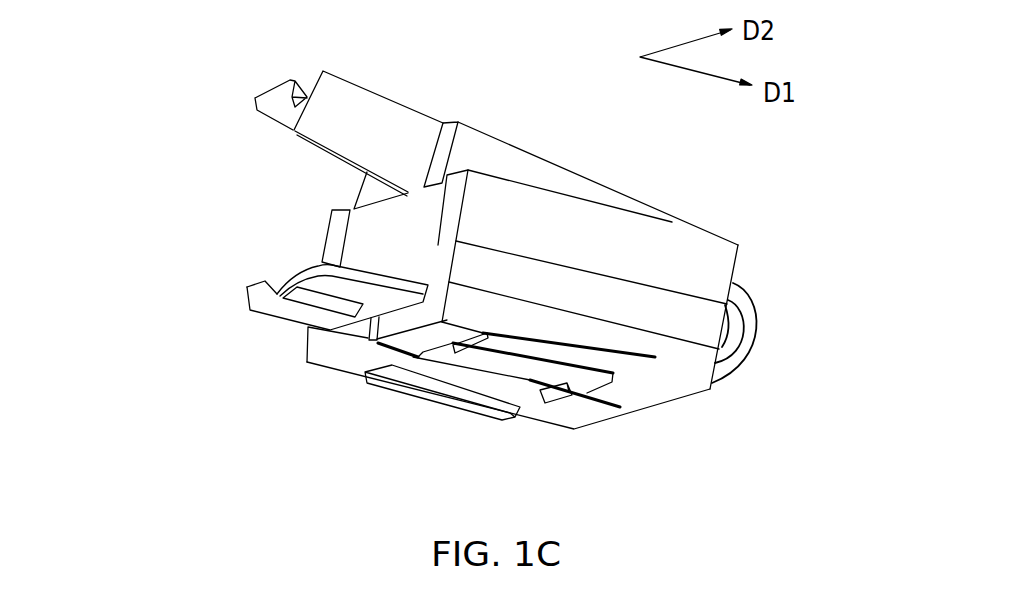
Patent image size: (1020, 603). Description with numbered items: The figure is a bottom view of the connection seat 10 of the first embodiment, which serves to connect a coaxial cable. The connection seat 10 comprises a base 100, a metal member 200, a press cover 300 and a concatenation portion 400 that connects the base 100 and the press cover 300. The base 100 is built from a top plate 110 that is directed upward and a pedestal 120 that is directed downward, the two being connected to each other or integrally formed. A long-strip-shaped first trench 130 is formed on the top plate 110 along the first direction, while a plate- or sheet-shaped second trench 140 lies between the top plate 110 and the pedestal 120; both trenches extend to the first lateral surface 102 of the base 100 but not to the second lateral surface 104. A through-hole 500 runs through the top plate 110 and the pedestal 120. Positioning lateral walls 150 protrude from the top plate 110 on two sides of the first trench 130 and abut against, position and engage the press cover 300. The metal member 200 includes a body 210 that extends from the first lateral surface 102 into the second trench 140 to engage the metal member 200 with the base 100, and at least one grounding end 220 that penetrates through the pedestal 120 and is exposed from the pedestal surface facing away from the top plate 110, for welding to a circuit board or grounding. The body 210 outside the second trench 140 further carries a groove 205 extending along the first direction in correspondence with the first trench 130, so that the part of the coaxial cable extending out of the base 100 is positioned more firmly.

The connection seat 10 is at (255, 24).
The base 100 is at (722, 405).
The first lateral surface 102 is at (318, 343).
The second lateral surface 104 is at (748, 362).
The top plate 110 is at (628, 313).
The pedestal 120 is at (653, 353).
The first trench 130 is at (386, 262).
The second trench 140 is at (406, 296).
The positioning lateral walls 150 is at (575, 240).
The metal member 200 is at (242, 290).
The groove 205 is at (277, 290).
The body 210 is at (312, 267).
The grounding end 220 is at (523, 362).
The press cover 300 is at (503, 138).
The concatenation portion 400 is at (745, 290).
The through-hole 500 is at (575, 398).